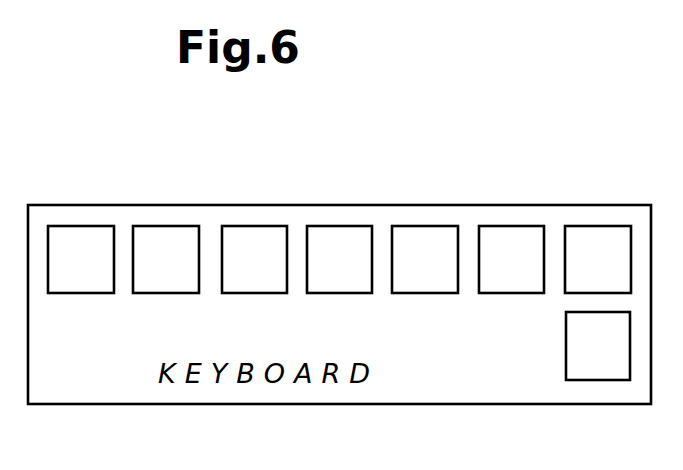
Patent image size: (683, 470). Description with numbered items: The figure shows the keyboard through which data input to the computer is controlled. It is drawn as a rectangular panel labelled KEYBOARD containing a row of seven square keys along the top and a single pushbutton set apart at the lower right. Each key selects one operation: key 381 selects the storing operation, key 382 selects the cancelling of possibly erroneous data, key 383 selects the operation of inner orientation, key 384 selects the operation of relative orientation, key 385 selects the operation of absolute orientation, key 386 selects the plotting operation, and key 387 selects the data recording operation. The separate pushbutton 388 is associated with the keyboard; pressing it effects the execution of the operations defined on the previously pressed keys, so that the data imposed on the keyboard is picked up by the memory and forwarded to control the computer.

The key 381 is at (588, 234).
The key 382 is at (503, 234).
The key 383 is at (419, 234).
The key 384 is at (331, 234).
The key 385 is at (251, 234).
The key 386 is at (163, 236).
The key 387 is at (78, 236).
The pushbutton 388 is at (607, 369).